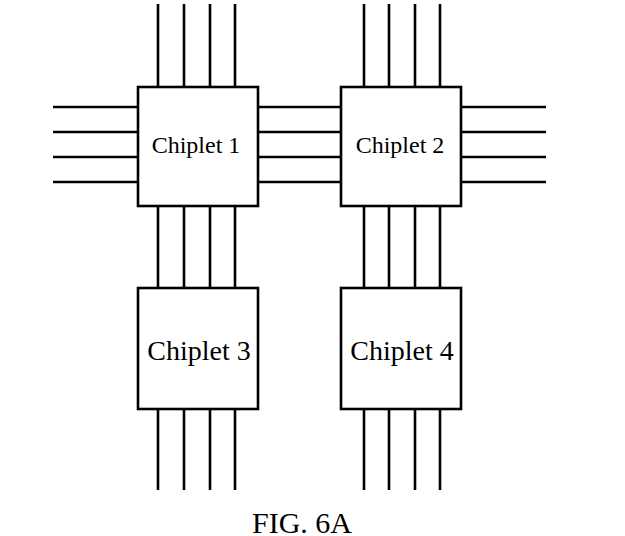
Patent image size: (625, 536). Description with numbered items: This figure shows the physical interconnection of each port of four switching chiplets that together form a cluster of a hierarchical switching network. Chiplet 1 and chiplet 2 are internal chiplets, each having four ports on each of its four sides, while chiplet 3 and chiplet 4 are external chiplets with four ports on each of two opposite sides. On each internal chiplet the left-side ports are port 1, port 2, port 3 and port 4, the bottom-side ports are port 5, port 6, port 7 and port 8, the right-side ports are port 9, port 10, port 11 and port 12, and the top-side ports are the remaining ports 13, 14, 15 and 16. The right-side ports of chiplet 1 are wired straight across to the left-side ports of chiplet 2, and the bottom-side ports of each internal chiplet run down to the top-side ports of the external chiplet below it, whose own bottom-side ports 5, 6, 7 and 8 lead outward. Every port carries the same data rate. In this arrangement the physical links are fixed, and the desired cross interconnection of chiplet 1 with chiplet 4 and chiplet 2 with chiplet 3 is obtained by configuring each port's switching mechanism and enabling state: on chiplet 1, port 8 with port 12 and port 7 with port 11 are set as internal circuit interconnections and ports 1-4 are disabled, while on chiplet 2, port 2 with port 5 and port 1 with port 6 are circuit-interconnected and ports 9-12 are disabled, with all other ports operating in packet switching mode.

The port 1 is at (210, 205).
The port 2 is at (223, 218).
The port 3 is at (236, 230).
The port 4 is at (248, 243).
The port 5 is at (262, 341).
The port 6 is at (288, 341).
The port 7 is at (314, 341).
The port 8 is at (339, 341).
The port 9 is at (394, 109).
The port 10 is at (394, 134).
The port 11 is at (393, 159).
The port 12 is at (394, 184).
The chiplet pin 13 / interconnect 13 is at (264, 53).
The chiplet pin 14 / interconnect 14 is at (289, 53).
The chiplet pin 15 / interconnect 15 is at (315, 53).
The chiplet pin 16 / interconnect 16 is at (340, 53).